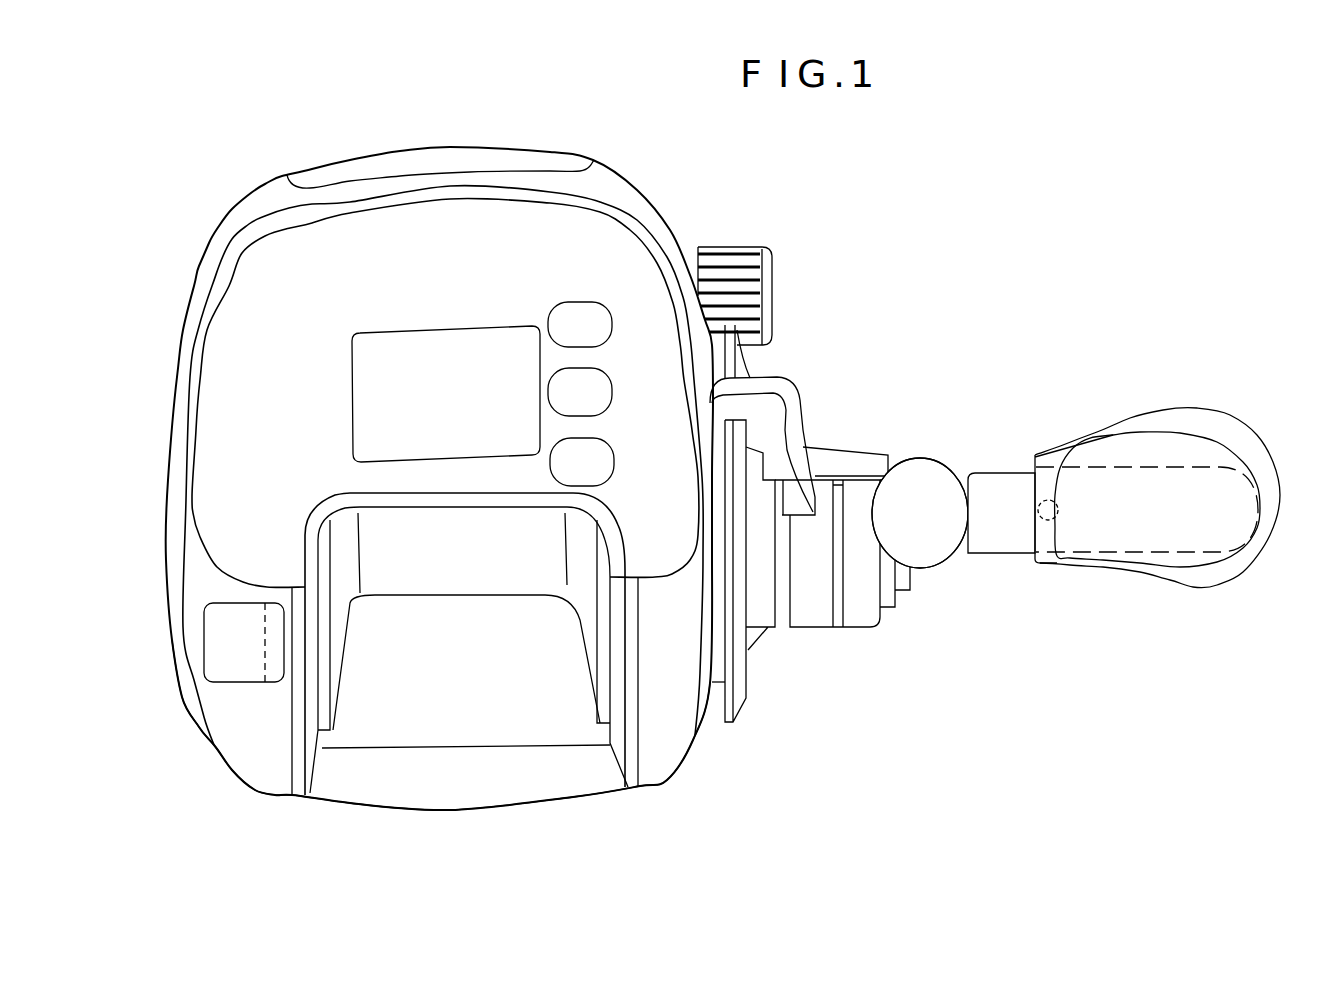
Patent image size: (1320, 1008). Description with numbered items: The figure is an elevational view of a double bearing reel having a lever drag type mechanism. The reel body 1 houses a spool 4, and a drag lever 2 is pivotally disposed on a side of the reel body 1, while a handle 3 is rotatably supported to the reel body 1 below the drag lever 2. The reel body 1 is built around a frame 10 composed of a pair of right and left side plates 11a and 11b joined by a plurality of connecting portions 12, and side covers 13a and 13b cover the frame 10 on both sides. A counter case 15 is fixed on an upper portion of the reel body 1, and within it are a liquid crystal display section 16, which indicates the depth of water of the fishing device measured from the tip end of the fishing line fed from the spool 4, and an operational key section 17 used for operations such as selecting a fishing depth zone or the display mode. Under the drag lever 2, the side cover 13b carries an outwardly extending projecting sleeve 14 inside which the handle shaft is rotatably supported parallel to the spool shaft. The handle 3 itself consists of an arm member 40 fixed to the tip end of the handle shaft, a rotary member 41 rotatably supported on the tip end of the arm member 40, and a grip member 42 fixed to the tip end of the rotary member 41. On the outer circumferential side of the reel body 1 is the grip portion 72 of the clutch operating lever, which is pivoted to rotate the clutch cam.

The reel body 1 is at (721, 516).
The drag lever 2 is at (782, 373).
The handle 3 is at (943, 463).
The spool 4 is at (457, 577).
The frame 10 is at (573, 802).
The side plate 11a is at (298, 797).
The side plate 11b is at (633, 790).
The connecting portion 12 is at (470, 787).
The side cover 13a is at (255, 793).
The side cover 13b is at (677, 740).
The projecting sleeve 14 is at (860, 460).
The counter case 15 is at (260, 270).
The liquid crystal display section 16 is at (428, 368).
The operational key section 17 is at (618, 377).
The arm member 40 is at (938, 553).
The rotary member 41 is at (1008, 480).
The grip member 42 is at (1177, 417).
The grip portion 72 is at (214, 653).